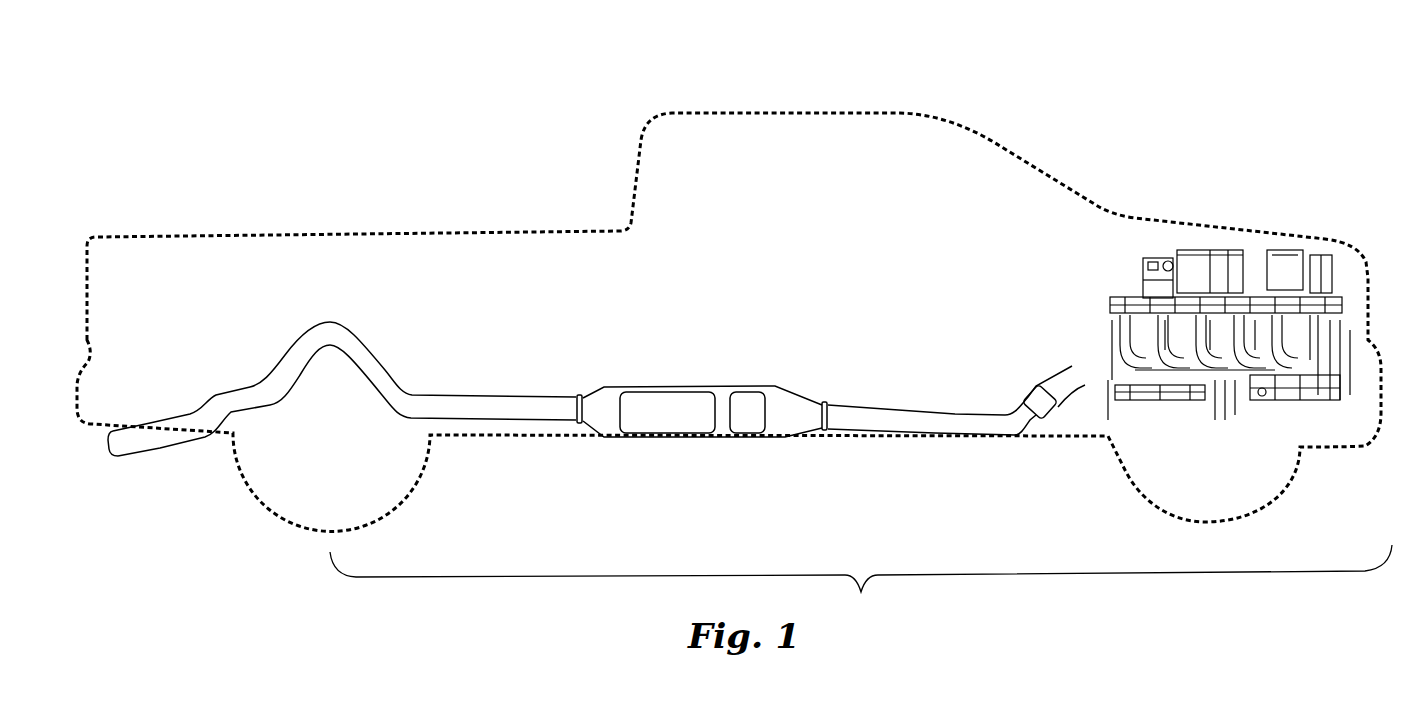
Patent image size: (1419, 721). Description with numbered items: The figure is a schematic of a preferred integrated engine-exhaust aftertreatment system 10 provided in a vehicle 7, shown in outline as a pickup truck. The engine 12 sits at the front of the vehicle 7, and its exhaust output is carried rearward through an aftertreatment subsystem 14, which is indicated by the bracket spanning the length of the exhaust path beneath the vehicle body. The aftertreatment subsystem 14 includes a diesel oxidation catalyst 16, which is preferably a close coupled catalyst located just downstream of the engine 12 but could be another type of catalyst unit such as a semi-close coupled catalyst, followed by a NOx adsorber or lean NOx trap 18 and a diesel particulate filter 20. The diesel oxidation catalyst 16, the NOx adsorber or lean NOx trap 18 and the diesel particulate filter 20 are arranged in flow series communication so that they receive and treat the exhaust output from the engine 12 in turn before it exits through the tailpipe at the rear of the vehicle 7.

The vehicle 7 is at (783, 112).
The integrated engine-exhaust aftertreatment system 10 is at (1140, 92).
The engine 12 is at (1225, 268).
The aftertreatment subsystem 14 is at (750, 470).
The diesel oxidation catalyst 16 is at (1034, 386).
The NOx adsorber or lean NOx trap 18 is at (746, 400).
The diesel particulate filter 20 is at (631, 396).